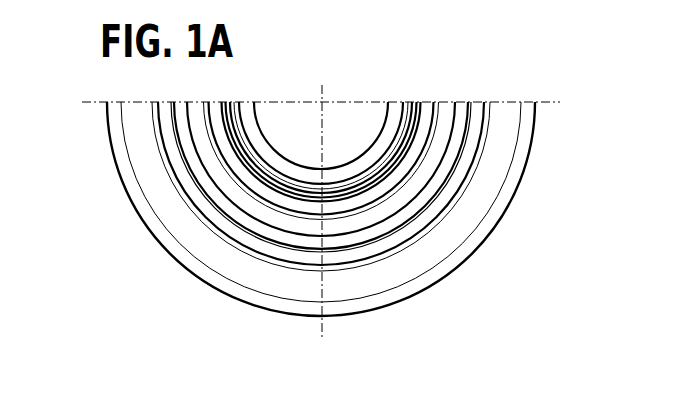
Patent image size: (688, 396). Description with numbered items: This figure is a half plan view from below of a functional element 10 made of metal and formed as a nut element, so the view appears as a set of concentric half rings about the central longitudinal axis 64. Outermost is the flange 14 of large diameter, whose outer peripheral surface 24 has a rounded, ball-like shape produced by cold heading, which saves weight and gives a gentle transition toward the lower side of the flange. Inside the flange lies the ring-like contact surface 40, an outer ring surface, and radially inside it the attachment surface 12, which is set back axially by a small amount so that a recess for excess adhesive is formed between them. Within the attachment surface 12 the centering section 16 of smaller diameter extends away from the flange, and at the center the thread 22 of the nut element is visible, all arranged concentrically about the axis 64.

The functional element 10 is at (119, 233).
The attachment surface 12 is at (430, 180).
The flange 14 is at (509, 208).
The centering section 16 is at (243, 148).
The thread 22 is at (401, 113).
The outer peripheral surface 24 is at (195, 280).
The contact surface 40 is at (432, 257).
The central longitudinal axis 64 is at (322, 102).